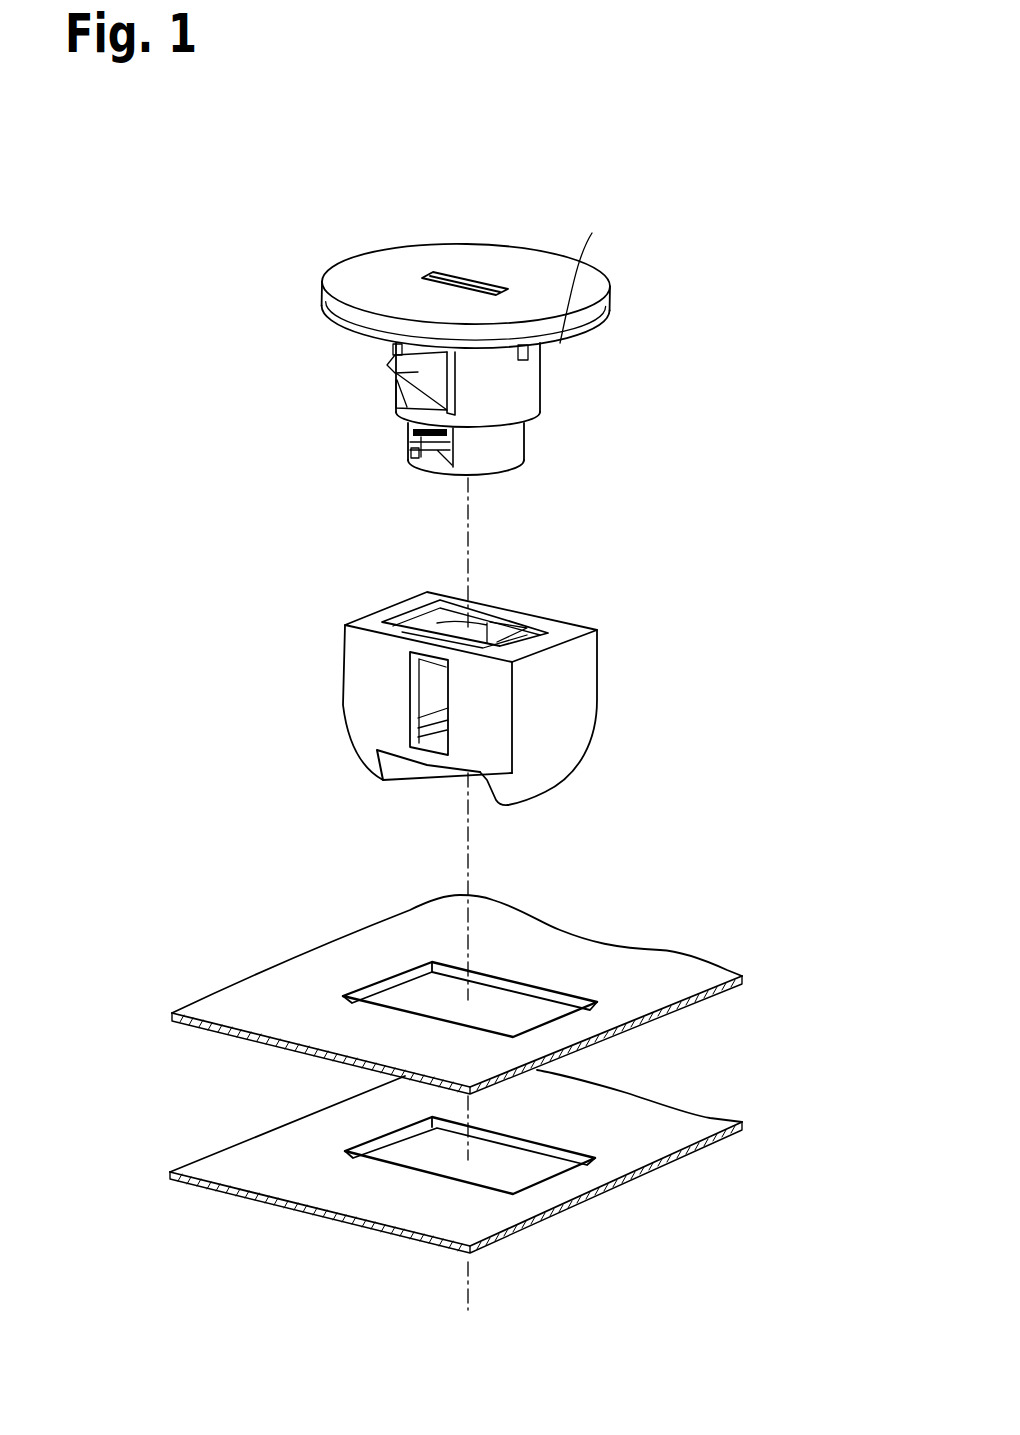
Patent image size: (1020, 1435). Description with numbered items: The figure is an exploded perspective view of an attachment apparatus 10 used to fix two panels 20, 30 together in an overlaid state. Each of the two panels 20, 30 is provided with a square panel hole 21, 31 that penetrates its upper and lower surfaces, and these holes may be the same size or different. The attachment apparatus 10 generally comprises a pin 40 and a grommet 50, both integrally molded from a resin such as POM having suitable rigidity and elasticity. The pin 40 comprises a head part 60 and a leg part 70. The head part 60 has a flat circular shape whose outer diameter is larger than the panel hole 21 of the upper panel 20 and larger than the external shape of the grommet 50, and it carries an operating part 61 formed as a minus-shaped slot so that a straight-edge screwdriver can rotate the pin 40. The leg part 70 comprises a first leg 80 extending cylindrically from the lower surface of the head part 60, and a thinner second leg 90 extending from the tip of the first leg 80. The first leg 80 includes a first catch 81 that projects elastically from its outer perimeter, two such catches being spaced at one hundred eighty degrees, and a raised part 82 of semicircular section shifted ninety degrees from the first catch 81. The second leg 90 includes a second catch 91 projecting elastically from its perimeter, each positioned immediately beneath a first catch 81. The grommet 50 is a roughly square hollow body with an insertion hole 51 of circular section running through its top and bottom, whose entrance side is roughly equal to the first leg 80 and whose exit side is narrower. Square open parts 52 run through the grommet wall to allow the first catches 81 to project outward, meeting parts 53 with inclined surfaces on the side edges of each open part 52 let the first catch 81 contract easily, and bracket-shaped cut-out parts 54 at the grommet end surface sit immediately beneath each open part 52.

The attachment apparatus 10 is at (308, 226).
The panel 20 is at (658, 967).
The panel hole 21 is at (415, 993).
The panel 30 is at (683, 1128).
The panel hole 31 is at (410, 1147).
The pin 40 is at (695, 312).
The grommet 50 is at (577, 698).
The insertion hole 51 is at (508, 607).
The open part 52 is at (412, 717).
The meeting part 53 is at (408, 697).
The cut-out part 54 is at (430, 772).
The head part 60 is at (595, 315).
The operating part 61 is at (478, 288).
The leg part 70 is at (615, 507).
The first leg 80 is at (530, 397).
The first catch 81 is at (395, 377).
The raised part 82 is at (600, 275).
The second leg 90 is at (517, 451).
The second catch 91 is at (413, 455).